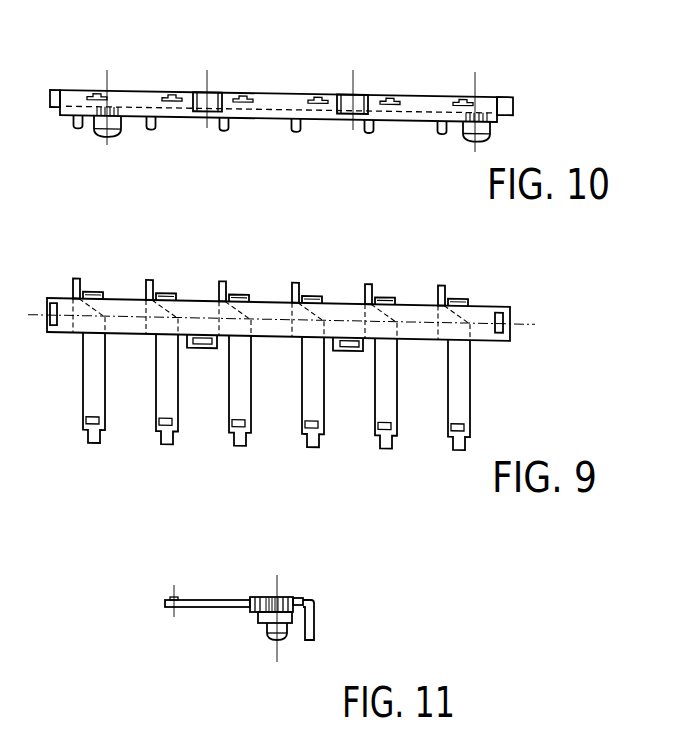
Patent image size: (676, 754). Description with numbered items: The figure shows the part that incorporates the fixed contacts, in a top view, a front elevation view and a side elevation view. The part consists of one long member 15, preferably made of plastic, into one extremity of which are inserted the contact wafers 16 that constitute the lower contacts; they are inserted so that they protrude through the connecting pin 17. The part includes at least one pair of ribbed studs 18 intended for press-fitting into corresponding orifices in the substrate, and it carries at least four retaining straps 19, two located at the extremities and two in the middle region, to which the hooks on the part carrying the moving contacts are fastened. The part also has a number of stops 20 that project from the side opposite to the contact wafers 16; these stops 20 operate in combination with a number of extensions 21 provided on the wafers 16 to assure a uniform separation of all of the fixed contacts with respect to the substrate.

In FIG. 10, the long member 15 is at (297, 130).
In FIG. 9, the long member 15 is at (412, 312).
In FIG. 11, the long member 15 is at (263, 618).
In FIG. 10, the contact wafers 16 is at (248, 97).
In FIG. 9, the contact wafers 16 is at (232, 393).
In FIG. 11, the contact wafers 16 is at (200, 600).
In FIG. 10, the connecting pin 17 is at (295, 100).
In FIG. 9, the connecting pin 17 is at (298, 300).
In FIG. 11, the connecting pin 17 is at (308, 641).
In FIG. 10, the ribbed studs 18 is at (113, 134).
In FIG. 11, the ribbed studs 18 is at (265, 636).
In FIG. 10, the retaining straps 19 is at (52, 88).
In FIG. 9, the retaining straps 19 is at (49, 333).
In FIG. 11, the retaining straps 19 is at (270, 598).
In FIG. 10, the stops 20 is at (280, 53).
In FIG. 9, the stops 20 is at (163, 297).
In FIG. 11, the stops 20 is at (297, 598).
In FIG. 9, the extensions 21 is at (300, 436).